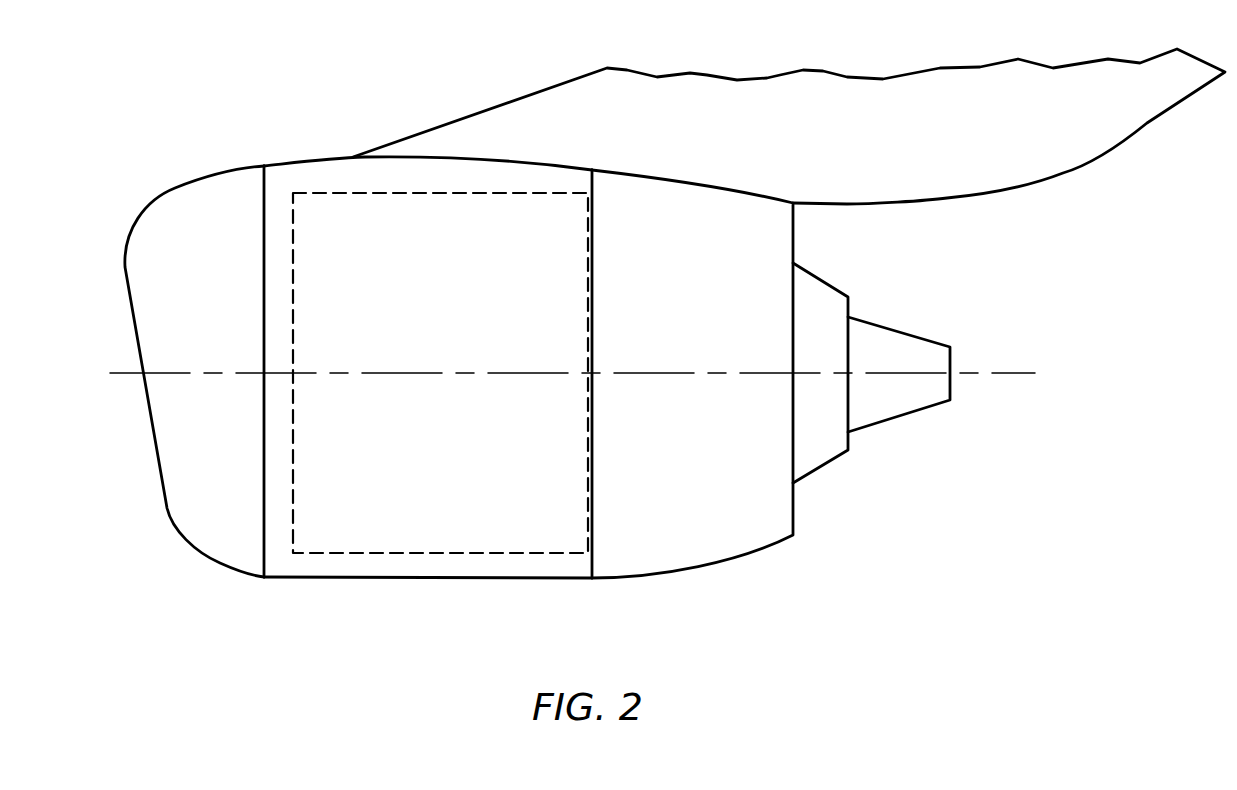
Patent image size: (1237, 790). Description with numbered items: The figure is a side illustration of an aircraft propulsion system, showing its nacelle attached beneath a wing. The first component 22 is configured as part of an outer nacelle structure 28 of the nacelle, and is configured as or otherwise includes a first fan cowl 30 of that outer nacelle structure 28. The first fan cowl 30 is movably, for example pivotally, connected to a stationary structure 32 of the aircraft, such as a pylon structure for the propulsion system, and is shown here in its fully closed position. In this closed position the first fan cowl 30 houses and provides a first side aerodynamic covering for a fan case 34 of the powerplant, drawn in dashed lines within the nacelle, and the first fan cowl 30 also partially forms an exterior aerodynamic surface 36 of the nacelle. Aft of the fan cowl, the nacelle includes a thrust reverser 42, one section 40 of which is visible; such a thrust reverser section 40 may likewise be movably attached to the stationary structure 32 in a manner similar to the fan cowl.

The first component 22 is at (299, 127).
The first fan cowl 30 is at (457, 375).
The outer nacelle structure 28 is at (189, 146).
The stationary structure 32 is at (442, 95).
The fan case 34 is at (347, 553).
The exterior aerodynamic surface 36 is at (283, 556).
The thrust reverser section 40 is at (632, 580).
The thrust reverser 42 is at (711, 602).